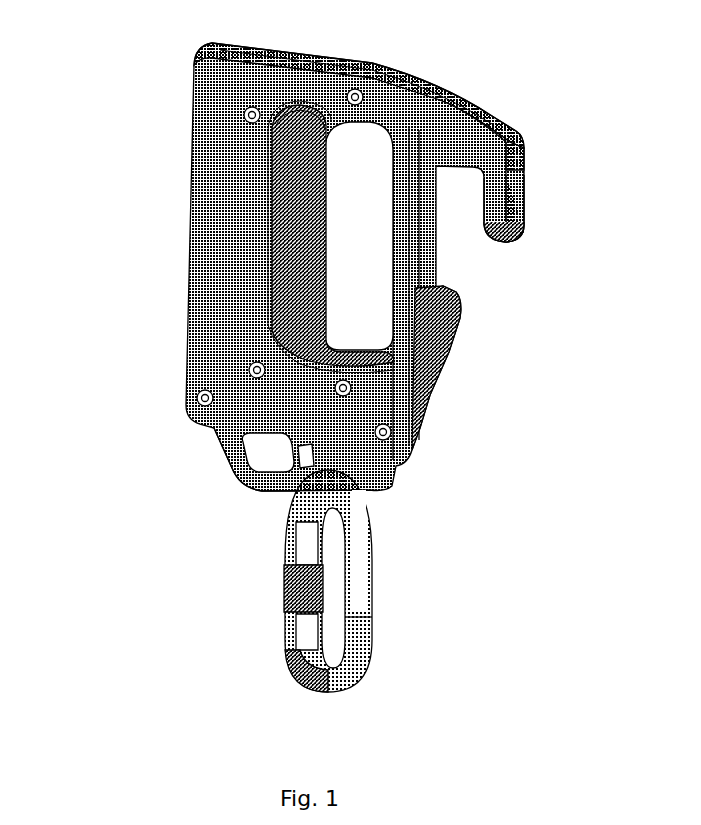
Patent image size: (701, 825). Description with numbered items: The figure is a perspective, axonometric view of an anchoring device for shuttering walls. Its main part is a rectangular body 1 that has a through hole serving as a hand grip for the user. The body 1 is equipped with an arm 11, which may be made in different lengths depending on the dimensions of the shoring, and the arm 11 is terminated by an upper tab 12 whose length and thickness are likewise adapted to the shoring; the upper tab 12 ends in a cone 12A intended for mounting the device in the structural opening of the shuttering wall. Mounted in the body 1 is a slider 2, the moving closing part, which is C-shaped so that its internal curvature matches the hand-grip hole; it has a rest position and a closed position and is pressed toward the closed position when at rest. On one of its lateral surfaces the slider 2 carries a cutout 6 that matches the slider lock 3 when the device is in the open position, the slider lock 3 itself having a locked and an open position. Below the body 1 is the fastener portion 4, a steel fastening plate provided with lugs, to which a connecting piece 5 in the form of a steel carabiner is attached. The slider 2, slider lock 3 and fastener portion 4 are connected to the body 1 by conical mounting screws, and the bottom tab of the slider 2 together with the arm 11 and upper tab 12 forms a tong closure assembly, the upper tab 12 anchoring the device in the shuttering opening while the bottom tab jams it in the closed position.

The body 1 is at (214, 262).
The slider 2 is at (279, 329).
The slider lock 3 is at (182, 110).
The fastener portion 4 is at (218, 447).
The connecting piece 5 is at (279, 667).
The cutout 6 is at (324, 114).
The arm 11 is at (471, 113).
The upper tab 12 is at (527, 173).
The cone 12A is at (508, 230).